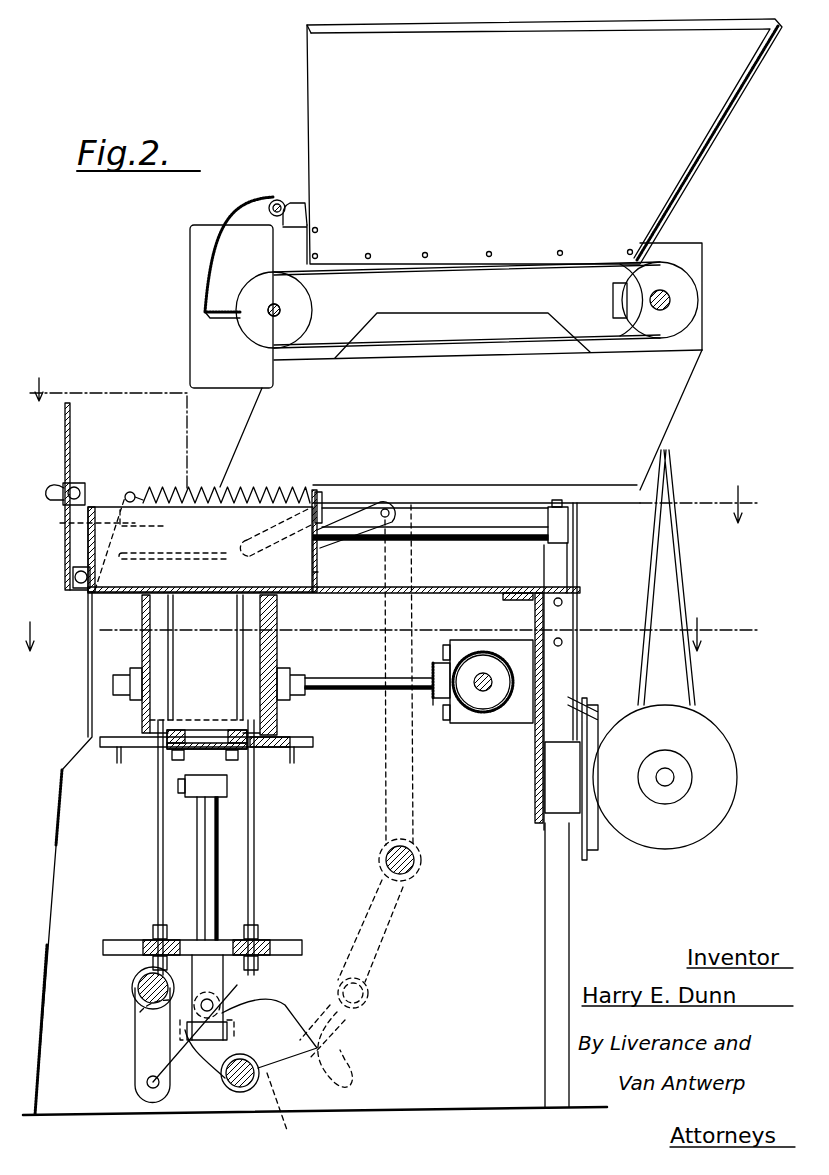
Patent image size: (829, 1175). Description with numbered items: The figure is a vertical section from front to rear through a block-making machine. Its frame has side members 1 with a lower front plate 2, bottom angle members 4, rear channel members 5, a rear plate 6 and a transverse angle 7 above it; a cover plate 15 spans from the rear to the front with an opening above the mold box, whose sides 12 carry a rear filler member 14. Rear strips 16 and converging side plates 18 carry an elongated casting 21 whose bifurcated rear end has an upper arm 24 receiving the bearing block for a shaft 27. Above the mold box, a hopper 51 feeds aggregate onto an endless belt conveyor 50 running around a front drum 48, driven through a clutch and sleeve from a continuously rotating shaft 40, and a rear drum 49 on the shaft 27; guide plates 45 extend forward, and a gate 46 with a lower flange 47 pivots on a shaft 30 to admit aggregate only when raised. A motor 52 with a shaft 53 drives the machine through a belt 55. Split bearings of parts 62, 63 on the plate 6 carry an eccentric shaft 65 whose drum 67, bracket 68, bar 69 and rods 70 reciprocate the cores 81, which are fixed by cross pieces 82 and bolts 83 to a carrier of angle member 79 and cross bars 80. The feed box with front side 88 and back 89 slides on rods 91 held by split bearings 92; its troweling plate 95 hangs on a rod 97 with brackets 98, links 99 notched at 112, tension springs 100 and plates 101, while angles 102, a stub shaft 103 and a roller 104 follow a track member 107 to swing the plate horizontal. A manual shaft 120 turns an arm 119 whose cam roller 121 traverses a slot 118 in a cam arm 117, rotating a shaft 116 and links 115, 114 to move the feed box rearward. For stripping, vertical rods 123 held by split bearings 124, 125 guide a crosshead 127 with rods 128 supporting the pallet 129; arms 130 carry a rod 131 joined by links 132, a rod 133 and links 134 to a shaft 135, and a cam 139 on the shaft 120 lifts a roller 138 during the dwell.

The side members 1 is at (510, 1090).
The lower front plate 2 is at (42, 1020).
The angle member 4 is at (384, 456).
The channel members 5 is at (560, 940).
The plate 6 is at (545, 788).
The angle 7 is at (560, 616).
The sides of the mold box 12 is at (142, 632).
The filler member 14 is at (278, 700).
The cover plate 15 is at (455, 587).
The supporting strip 16 is at (565, 567).
The side plates 18 is at (680, 390).
The elongated casting 21 is at (450, 290).
The upper arm 24 is at (702, 250).
The shaft 27 is at (668, 305).
The shaft 30 is at (277, 200).
The shaft 40 is at (280, 312).
The plates 45 is at (190, 253).
The gate 46 is at (247, 215).
The flange 47 is at (218, 318).
The drum 48 is at (290, 297).
The drum 49 is at (682, 300).
The endless belt conveyor 50 is at (510, 350).
The hopper 51 is at (320, 72).
The motor 52 is at (700, 815).
The motor shaft 53 is at (668, 777).
The belt 55 is at (680, 582).
The bearing part 62 is at (518, 722).
The bearing part 63 is at (458, 720).
The eccentric shaft 65 is at (486, 672).
The drum 67 is at (470, 660).
The bracket 68 is at (446, 712).
The elongated bar 69 is at (432, 700).
The rods 70 is at (362, 685).
The longitudinal angle member 79 is at (100, 745).
The cross bars 80 is at (270, 747).
The cores 81 is at (174, 645).
The cross pieces 82 is at (180, 740).
The bolts 83 is at (178, 760).
The front side of the feed box 88 is at (90, 530).
The back of the feed box 89 is at (320, 574).
The rods 91 is at (500, 520).
The split bearings 92 is at (568, 538).
The troweling plate 95 is at (70, 405).
The rod 97 is at (80, 590).
The brackets 98 is at (73, 577).
The links 99 is at (80, 521).
The tension springs 100 is at (220, 487).
The plates 101 is at (322, 492).
The angles 102 is at (52, 492).
The stub shaft 103 is at (80, 495).
The roller 104 is at (82, 485).
The track member 107 is at (165, 562).
The notch 112 is at (140, 520).
The link 114 is at (340, 535).
The link 115 is at (415, 805).
The shaft 116 is at (408, 862).
The cam arm 117 is at (395, 930).
The slot 118 is at (350, 1030).
The arm 119 is at (298, 1110).
The shaft 120 is at (240, 1092).
The cam roller 121 is at (360, 1000).
The vertical rods 123 is at (205, 830).
The split bearing 124 is at (227, 790).
The split bearing 125 is at (212, 1042).
The crosshead 127 is at (125, 940).
The rods 128 is at (160, 810).
The pallet 129 is at (172, 732).
The arms 130 is at (200, 960).
The rod 131 is at (213, 1000).
The link 132 is at (180, 1062).
The rod 133 is at (148, 1088).
The link 134 is at (145, 1048).
The shaft 135 is at (135, 985).
The roller 138 is at (140, 1012).
The cam 139 is at (275, 1020).